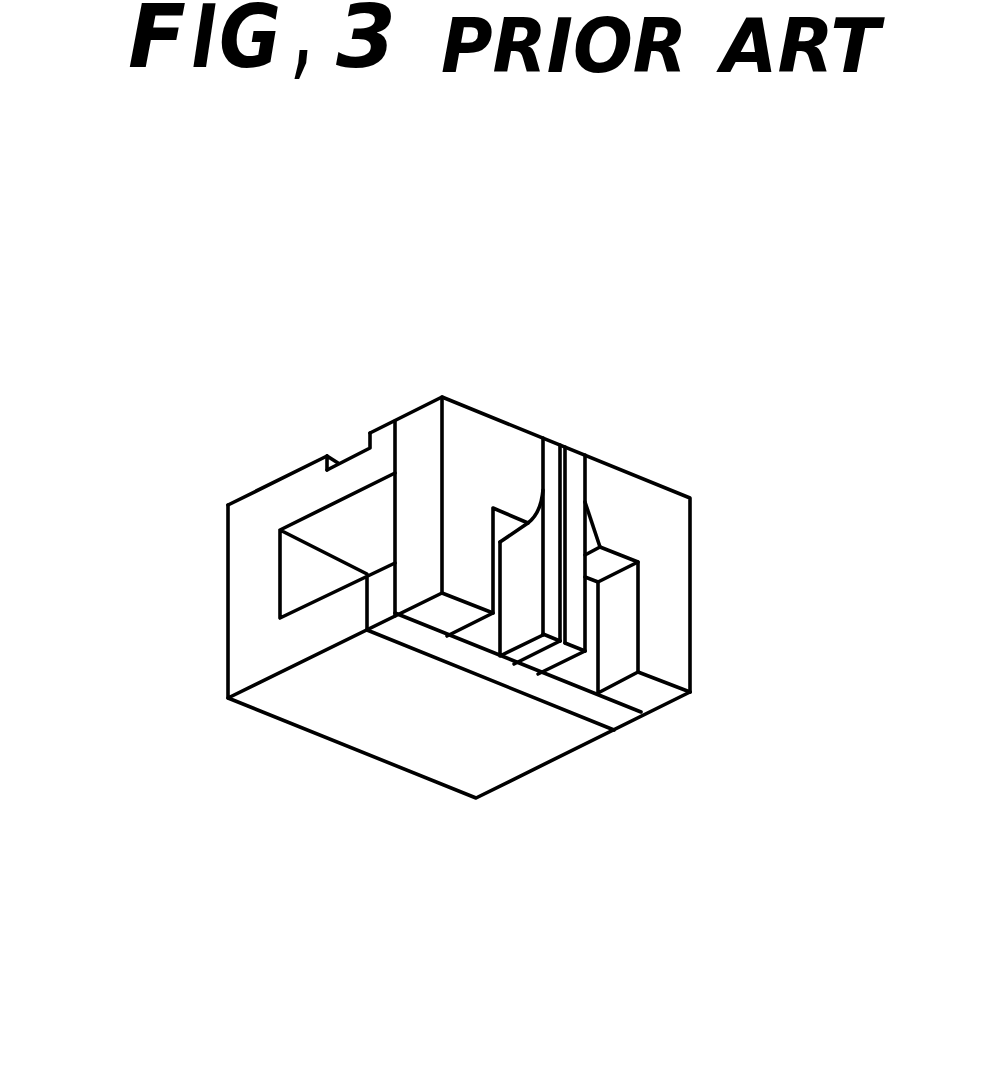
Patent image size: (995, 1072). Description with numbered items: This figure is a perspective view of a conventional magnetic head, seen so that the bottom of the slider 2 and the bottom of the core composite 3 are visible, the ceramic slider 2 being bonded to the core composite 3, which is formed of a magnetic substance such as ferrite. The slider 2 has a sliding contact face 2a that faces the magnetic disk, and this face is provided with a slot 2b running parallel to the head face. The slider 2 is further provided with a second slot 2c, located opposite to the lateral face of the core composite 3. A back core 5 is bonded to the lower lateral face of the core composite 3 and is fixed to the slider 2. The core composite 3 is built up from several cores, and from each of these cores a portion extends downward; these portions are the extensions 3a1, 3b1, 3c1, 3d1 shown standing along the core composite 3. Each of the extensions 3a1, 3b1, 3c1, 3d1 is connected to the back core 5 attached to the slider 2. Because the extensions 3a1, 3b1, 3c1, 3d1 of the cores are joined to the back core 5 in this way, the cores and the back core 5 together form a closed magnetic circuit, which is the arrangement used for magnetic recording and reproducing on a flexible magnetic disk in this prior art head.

The ceramic slider 2 is at (304, 716).
The sliding contact face 2a is at (270, 482).
The slot 2b is at (360, 452).
The slot 2c is at (296, 576).
The core composite 3 is at (505, 443).
The extension 3a1 is at (446, 613).
The extension 3b1 is at (525, 655).
The extension 3c1 is at (557, 658).
The extension 3d1 is at (668, 697).
The back core 5 is at (622, 722).